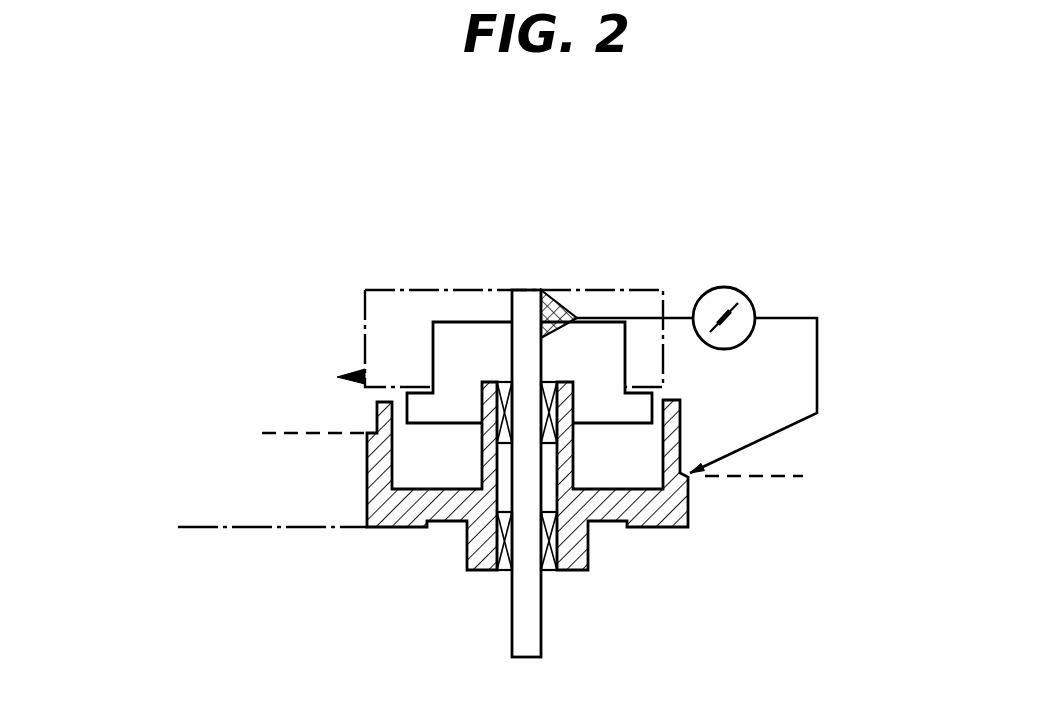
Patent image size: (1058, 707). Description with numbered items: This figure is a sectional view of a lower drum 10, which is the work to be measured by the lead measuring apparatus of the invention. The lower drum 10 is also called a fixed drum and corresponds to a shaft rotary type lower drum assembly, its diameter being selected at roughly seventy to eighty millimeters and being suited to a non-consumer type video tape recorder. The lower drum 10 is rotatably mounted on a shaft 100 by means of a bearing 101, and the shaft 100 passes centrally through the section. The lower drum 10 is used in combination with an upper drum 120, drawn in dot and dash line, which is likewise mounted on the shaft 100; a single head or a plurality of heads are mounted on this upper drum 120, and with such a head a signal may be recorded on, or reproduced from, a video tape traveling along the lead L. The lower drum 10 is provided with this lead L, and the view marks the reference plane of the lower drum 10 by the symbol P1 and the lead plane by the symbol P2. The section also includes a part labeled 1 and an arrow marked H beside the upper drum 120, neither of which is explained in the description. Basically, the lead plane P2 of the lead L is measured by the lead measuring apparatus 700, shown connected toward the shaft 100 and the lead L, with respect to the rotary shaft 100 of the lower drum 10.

The detector (magnetic sensor head) 1 is at (562, 297).
The lower drum 10 is at (381, 530).
The shaft 100 is at (518, 625).
The bearing 101 is at (505, 380).
The upper drum 120 is at (600, 290).
The lead measuring apparatus 700 is at (727, 288).
The height direction H is at (343, 374).
The lead L is at (370, 432).
The reference plane P1 is at (285, 530).
The lead plane P2 is at (280, 433).